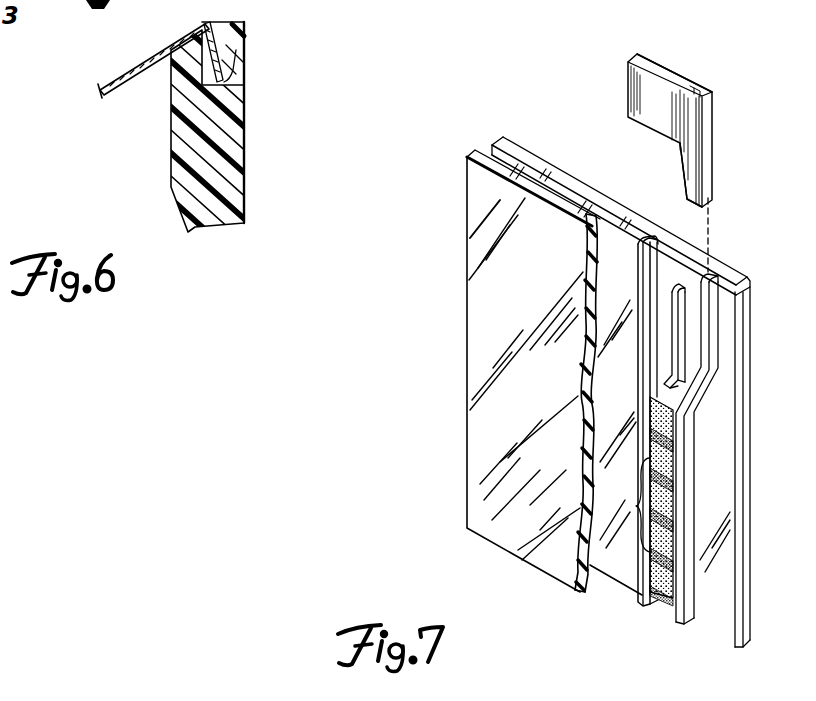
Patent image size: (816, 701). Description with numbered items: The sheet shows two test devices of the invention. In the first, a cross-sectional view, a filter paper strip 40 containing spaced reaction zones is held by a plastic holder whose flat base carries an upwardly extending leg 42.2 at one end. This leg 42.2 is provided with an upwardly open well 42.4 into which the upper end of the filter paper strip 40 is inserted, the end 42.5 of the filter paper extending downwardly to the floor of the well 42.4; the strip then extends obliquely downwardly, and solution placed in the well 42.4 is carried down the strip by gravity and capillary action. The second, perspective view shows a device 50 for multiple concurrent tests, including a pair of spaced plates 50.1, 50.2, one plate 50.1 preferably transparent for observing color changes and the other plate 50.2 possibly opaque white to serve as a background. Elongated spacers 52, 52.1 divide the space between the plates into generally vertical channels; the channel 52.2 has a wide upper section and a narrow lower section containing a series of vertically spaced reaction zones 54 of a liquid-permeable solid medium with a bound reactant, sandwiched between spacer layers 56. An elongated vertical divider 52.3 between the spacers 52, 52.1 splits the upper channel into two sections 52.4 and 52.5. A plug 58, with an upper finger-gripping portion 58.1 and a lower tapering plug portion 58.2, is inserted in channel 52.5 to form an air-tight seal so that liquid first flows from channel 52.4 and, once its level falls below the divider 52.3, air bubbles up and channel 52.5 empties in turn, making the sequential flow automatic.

In FIG. 6, the filter paper strip 40 is at (122, 74).
In FIG. 6, the leg 42.2 is at (232, 137).
In FIG. 6, the well 42.4 is at (236, 52).
In FIG. 6, the end of the filter paper 42.5 is at (244, 88).
In FIG. 7, the device 50 is at (466, 370).
In FIG. 7, the plate 50.1 is at (487, 245).
In FIG. 7, the plate 50.2 is at (512, 153).
In FIG. 7, the spacer 52 is at (647, 236).
In FIG. 7, the spacer 52.1 is at (706, 324).
In FIG. 7, the channel 52.2 is at (673, 389).
In FIG. 7, the divider 52.3 is at (676, 352).
In FIG. 7, the channel section 52.4 is at (664, 288).
In FIG. 7, the channel section 52.5 is at (712, 270).
In FIG. 7, the reaction zones 54 is at (657, 490).
In FIG. 7, the spacer layers 56 is at (638, 506).
In FIG. 7, the plug 58 is at (692, 87).
In FIG. 7, the finger-gripping portion 58.1 is at (647, 78).
In FIG. 7, the plug portion 58.2 is at (694, 189).